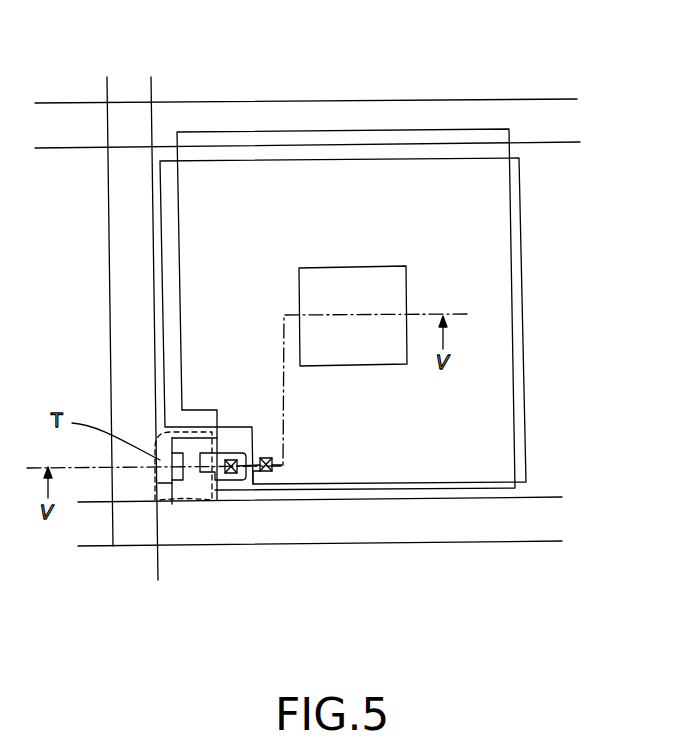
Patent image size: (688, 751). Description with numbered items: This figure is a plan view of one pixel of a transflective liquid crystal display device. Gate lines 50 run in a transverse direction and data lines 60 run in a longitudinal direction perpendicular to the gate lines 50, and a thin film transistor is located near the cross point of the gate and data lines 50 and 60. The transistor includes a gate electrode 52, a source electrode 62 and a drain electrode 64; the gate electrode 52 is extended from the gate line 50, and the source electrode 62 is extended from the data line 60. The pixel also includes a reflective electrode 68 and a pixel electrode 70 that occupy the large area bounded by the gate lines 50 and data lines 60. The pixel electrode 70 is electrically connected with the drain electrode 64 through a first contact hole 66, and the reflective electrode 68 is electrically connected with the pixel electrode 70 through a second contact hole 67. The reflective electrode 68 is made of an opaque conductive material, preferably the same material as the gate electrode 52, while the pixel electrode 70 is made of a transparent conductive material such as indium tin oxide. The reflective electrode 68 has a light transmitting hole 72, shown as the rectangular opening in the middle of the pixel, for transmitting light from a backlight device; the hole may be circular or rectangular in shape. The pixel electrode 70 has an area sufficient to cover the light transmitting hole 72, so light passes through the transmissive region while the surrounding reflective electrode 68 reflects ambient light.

The gate line 50 is at (406, 527).
The gate electrode 52 is at (190, 490).
The data line 60 is at (123, 270).
The source electrode 62 is at (132, 495).
The drain electrode 64 is at (203, 480).
The first contact hole 66 is at (232, 473).
The second contact hole 67 is at (270, 473).
The reflective electrode 68 is at (522, 290).
The pixel electrode 70 is at (510, 227).
The light transmitting hole 72 is at (357, 280).